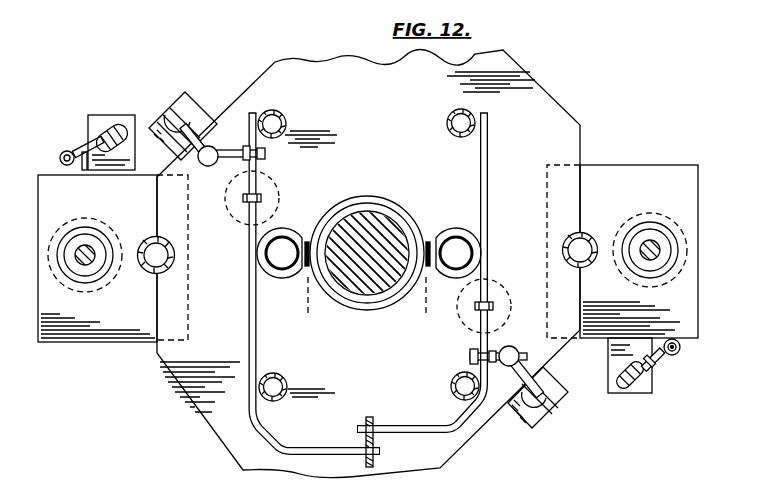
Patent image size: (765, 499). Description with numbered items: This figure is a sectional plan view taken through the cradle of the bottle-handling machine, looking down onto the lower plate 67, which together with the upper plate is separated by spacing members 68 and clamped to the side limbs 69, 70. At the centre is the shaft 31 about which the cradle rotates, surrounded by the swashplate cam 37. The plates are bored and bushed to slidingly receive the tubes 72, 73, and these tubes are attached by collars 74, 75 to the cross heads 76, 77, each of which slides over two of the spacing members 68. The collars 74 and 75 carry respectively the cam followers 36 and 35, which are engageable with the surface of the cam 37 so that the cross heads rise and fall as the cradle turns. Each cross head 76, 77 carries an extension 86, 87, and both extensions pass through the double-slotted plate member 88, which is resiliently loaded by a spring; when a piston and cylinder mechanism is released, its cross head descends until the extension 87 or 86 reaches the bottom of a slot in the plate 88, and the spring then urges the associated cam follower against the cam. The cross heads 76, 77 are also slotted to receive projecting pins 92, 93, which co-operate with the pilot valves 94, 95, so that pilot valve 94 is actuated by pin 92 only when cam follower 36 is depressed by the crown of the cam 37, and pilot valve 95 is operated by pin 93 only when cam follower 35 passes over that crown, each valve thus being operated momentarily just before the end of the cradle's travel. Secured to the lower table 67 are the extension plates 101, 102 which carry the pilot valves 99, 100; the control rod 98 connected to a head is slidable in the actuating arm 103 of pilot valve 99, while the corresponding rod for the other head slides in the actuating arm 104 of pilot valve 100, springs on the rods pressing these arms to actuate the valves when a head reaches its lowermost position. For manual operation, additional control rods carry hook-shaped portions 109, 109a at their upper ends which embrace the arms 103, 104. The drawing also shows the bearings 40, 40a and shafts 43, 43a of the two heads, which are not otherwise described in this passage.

The shaft 31 is at (361, 283).
The cam follower 35 is at (312, 305).
The cam follower 36 is at (424, 305).
The swashplate cam 37 is at (342, 209).
The bearing 40 is at (653, 222).
The bearing 40a is at (69, 229).
The shaft 43 is at (645, 245).
The shaft 43a is at (88, 250).
The lower plate 67 is at (551, 100).
The spacing members 68 is at (272, 109).
The side limb 69 is at (163, 239).
The side limb 70 is at (575, 261).
The tube 72 is at (455, 271).
The tube 73 is at (282, 272).
The collar 74 is at (455, 231).
The collar 75 is at (285, 233).
The cross head 76 is at (489, 276).
The cross head 77 is at (248, 302).
The extension 86 is at (391, 431).
The extension 87 is at (330, 447).
The double-slotted plate member 88 is at (368, 415).
The projecting pin 92 is at (514, 349).
The projecting pin 93 is at (208, 166).
The pilot valve 94 is at (541, 384).
The pilot valve 95 is at (183, 122).
The control rod 98 is at (671, 339).
The pilot valve 99 is at (635, 385).
The pilot valve 100 is at (101, 127).
The extension plate 101 is at (626, 165).
The extension plate 102 is at (45, 208).
The actuating arm 103 is at (653, 368).
The actuating arm 104 is at (94, 144).
The hook-shaped portion 109 is at (659, 360).
The hook-shaped portion 109a is at (85, 155).